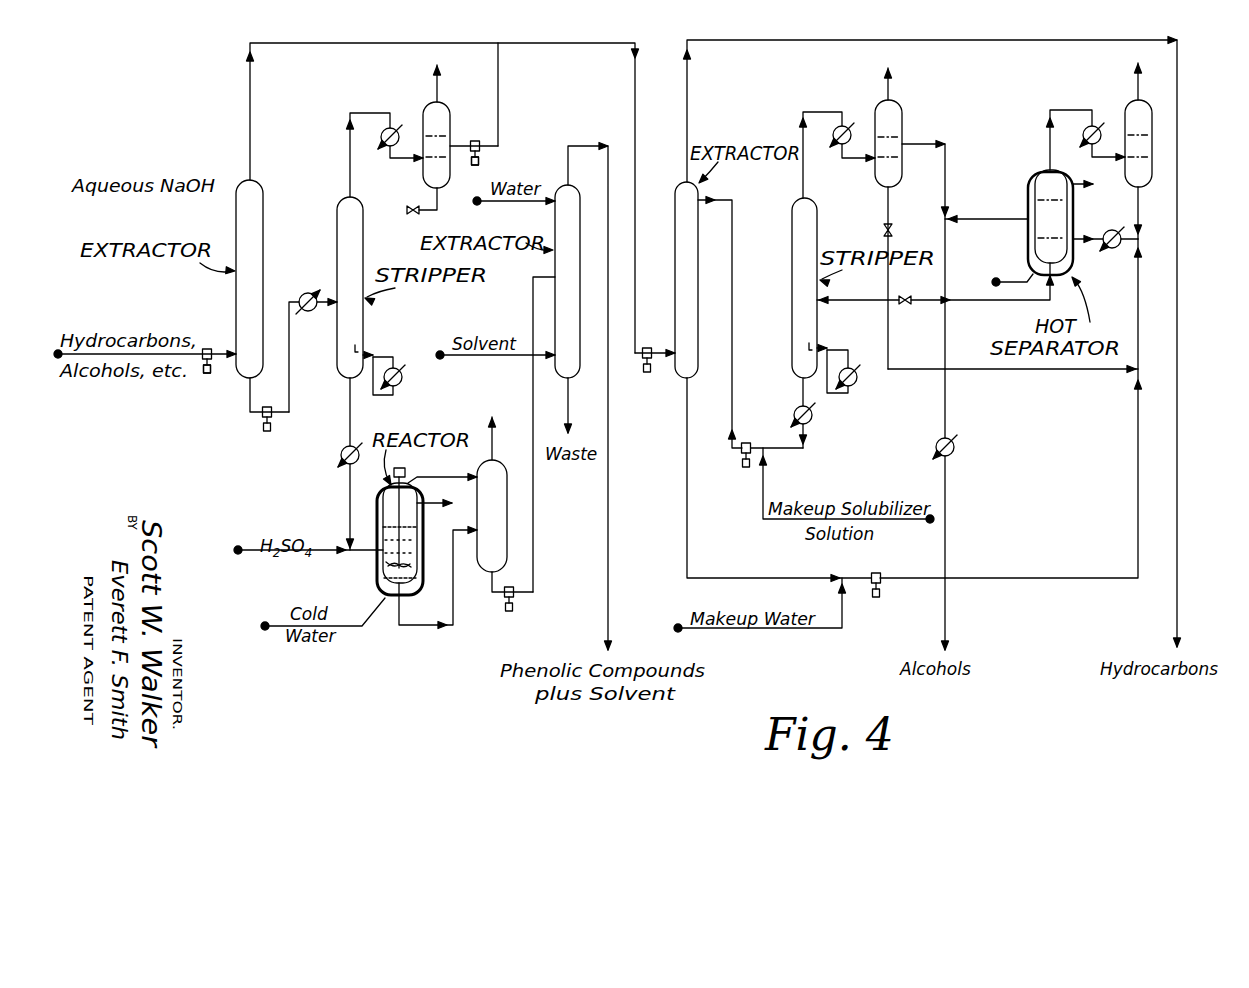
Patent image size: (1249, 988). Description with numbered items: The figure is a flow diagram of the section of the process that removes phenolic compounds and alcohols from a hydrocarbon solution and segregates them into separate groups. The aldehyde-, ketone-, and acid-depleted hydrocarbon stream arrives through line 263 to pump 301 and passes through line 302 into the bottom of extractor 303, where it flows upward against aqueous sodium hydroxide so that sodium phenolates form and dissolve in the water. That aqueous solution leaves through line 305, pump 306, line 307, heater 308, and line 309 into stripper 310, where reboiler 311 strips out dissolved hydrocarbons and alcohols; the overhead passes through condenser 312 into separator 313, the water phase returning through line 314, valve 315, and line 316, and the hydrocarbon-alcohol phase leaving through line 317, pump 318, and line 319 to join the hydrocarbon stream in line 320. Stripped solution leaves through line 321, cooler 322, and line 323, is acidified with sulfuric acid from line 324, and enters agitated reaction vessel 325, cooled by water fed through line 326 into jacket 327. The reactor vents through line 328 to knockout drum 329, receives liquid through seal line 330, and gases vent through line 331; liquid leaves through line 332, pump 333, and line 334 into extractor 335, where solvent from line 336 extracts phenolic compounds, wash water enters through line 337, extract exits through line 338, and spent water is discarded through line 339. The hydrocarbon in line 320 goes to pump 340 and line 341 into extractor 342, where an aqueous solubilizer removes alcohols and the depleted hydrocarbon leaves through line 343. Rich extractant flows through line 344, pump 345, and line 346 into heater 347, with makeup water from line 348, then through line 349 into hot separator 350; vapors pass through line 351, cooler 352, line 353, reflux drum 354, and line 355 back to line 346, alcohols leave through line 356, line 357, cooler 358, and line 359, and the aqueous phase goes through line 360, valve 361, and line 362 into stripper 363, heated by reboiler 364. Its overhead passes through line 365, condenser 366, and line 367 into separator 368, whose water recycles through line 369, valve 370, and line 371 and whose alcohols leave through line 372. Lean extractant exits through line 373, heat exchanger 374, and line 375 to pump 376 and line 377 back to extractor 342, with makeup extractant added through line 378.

The line 263 is at (153, 362).
The pump 301 is at (207, 347).
The line 302 is at (221, 366).
The extractor 303 is at (236, 293).
The line 305 is at (248, 408).
The pump 306 is at (267, 433).
The line 307 is at (282, 372).
The heater 308 is at (302, 291).
The line 309 is at (323, 310).
The stripper 310 is at (337, 234).
The reboiler 311 is at (403, 382).
The condenser 312 is at (378, 134).
The separator 313 is at (426, 103).
The line 314 is at (437, 204).
The valve 315 is at (414, 216).
The line 316 is at (378, 161).
The line 317 is at (459, 146).
The pump 318 is at (480, 163).
The line 319 is at (498, 103).
The line 320 is at (641, 285).
The line 321 is at (348, 412).
The cooler 322 is at (341, 455).
The line 323 is at (347, 505).
The line 324 is at (306, 553).
The agitated reaction vessel 325 is at (383, 560).
The line 326 is at (363, 630).
The jacket 327 is at (418, 572).
The line 328 is at (456, 477).
The knockout drum 329 is at (485, 494).
The seal line 330 is at (434, 628).
The line 331 is at (492, 442).
The line 332 is at (492, 578).
The pump 333 is at (510, 612).
The line 334 is at (533, 498).
The extractor 335 is at (555, 264).
The line 336 is at (513, 359).
The line 337 is at (490, 206).
The line 338 is at (591, 145).
The line 339 is at (570, 412).
The pump 340 is at (647, 374).
The line 341 is at (655, 341).
The extractor 342 is at (677, 240).
The line 343 is at (1010, 39).
The line 344 is at (687, 487).
The pump 345 is at (876, 600).
The line 346 is at (1138, 290).
The heater 347 is at (1114, 250).
The line 348 is at (797, 632).
The line 349 is at (1095, 237).
The hot separator 350 is at (1047, 173).
The line 351 is at (1050, 133).
The cooler 352 is at (1078, 133).
The line 353 is at (1099, 166).
The reflux drum 354 is at (1126, 108).
The line 355 is at (1140, 219).
The line 356 is at (988, 221).
The line 357 is at (945, 265).
The cooler 358 is at (955, 450).
The line 359 is at (945, 608).
The line 360 is at (970, 302).
The valve 361 is at (905, 308).
The line 362 is at (858, 316).
The stripper 363 is at (792, 262).
The reboiler 364 is at (856, 381).
The line 365 is at (802, 133).
The condenser 366 is at (831, 133).
The line 367 is at (853, 158).
The separator 368 is at (899, 117).
The line 369 is at (888, 212).
The valve 370 is at (895, 232).
The line 371 is at (1030, 371).
The line 372 is at (945, 163).
The line 373 is at (801, 397).
The heat exchanger 374 is at (810, 421).
The line 375 is at (783, 449).
The pump 376 is at (746, 468).
The line 377 is at (732, 304).
The line 378 is at (912, 529).